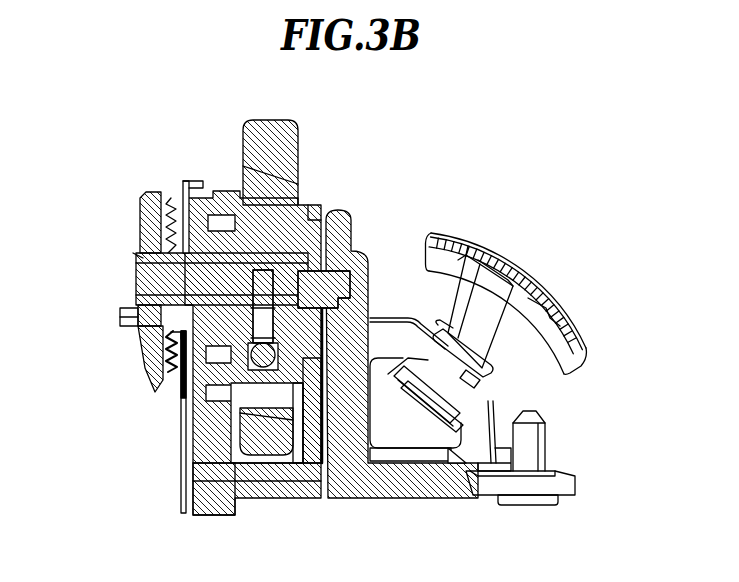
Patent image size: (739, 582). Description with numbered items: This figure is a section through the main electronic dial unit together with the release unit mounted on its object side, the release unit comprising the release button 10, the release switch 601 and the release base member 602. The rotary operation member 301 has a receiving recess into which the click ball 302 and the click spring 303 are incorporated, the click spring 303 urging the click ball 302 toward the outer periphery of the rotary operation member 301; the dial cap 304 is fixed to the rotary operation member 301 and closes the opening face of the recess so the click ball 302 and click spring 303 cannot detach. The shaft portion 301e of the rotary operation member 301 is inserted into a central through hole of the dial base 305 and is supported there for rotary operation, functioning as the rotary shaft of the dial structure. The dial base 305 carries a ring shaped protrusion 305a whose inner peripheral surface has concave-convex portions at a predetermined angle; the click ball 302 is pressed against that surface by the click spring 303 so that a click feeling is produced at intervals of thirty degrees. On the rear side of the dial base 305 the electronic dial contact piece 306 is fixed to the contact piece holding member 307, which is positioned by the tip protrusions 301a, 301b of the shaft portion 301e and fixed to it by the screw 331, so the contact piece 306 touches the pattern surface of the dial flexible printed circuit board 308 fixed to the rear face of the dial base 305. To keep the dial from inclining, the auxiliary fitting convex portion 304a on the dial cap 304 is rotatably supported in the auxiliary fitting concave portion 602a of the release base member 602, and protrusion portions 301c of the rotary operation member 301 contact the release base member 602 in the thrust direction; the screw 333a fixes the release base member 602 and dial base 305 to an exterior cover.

The release button 10 is at (450, 229).
The rotary operation member 301 is at (273, 127).
The tip protrusion 301a is at (127, 247).
The tip protrusion 301b is at (118, 312).
The protrusion portion 301c is at (302, 196).
The shaft portion 301e is at (192, 245).
The click ball 302 is at (248, 352).
The click spring 303 is at (243, 308).
The dial cap 304 is at (297, 357).
The auxiliary fitting convex portion 304a is at (333, 275).
The dial base 305 is at (222, 497).
The ring shaped protrusion 305a is at (283, 397).
The electronic dial contact piece 306 is at (162, 200).
The contact piece holding member 307 is at (140, 333).
The dial flexible printed circuit board 308 is at (173, 493).
The screw 331 is at (122, 268).
The screw 333a is at (517, 497).
The release switch 601 is at (483, 395).
The release base member 602 is at (332, 225).
The auxiliary fitting concave portion 602a is at (340, 305).